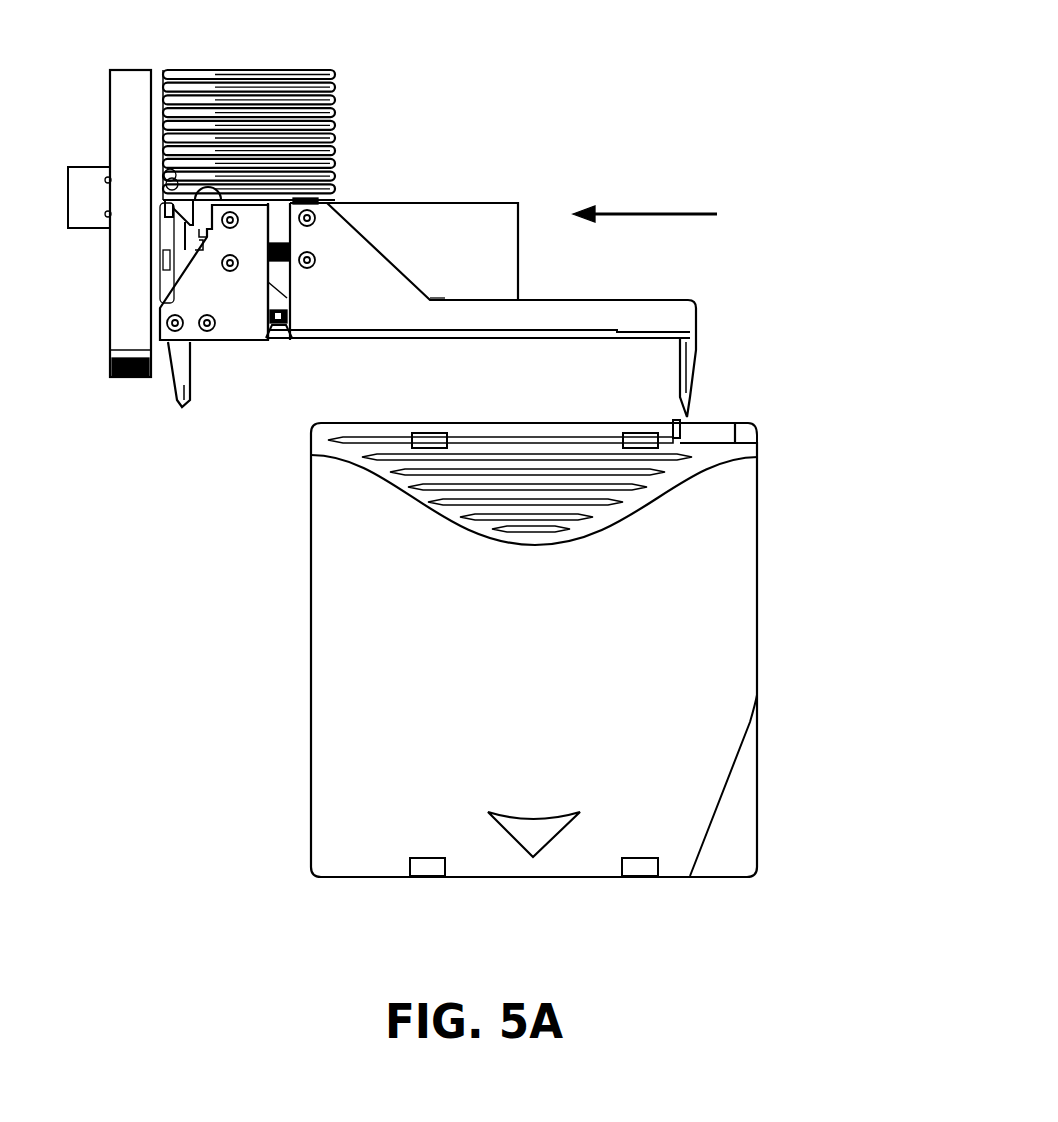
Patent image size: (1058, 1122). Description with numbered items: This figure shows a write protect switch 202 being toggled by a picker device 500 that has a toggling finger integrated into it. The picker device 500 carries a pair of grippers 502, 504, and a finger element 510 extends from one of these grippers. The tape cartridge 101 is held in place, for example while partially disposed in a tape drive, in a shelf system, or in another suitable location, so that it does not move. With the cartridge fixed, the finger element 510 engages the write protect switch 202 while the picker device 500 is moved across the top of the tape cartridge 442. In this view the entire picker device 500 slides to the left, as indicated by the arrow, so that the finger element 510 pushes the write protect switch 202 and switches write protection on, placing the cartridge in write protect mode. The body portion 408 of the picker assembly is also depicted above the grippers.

The picker device 500 is at (384, 128).
The housing 408 is at (424, 203).
The gripper 502 is at (693, 370).
The finger element 510 is at (690, 415).
The top of the tape cartridge 442 is at (527, 420).
The gripper 504 is at (172, 380).
The write protect switch 202 is at (685, 433).
The tape cartridge 101 is at (757, 575).